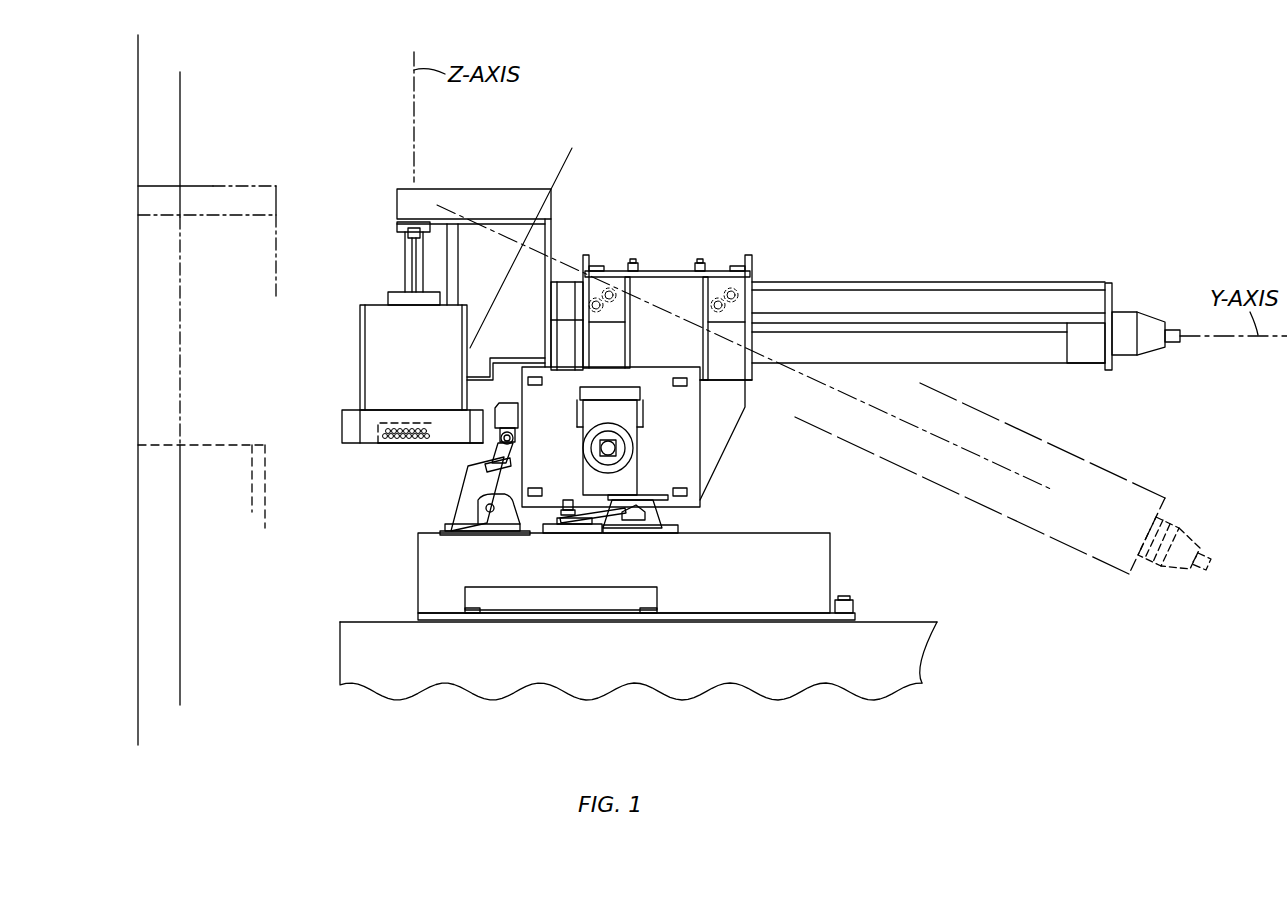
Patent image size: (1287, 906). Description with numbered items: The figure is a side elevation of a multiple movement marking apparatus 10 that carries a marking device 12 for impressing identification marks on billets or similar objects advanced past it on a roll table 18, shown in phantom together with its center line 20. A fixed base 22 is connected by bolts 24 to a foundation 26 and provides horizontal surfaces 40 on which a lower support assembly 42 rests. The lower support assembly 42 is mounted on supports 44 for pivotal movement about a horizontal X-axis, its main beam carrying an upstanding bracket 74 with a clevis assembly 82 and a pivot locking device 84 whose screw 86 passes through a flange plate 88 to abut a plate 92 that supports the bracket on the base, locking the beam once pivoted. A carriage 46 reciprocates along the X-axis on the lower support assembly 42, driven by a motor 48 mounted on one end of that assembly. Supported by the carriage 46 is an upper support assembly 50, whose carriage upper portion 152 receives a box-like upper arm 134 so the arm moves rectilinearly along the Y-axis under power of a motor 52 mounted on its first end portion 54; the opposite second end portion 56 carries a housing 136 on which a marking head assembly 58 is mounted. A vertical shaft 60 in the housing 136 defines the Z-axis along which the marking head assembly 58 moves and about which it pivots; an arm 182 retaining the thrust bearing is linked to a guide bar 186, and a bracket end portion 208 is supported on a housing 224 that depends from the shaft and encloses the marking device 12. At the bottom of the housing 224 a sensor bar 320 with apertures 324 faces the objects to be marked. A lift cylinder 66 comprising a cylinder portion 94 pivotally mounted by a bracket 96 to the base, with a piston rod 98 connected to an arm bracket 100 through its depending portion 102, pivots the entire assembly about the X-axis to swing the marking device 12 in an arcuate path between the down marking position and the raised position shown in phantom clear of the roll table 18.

The marking apparatus 10 is at (820, 242).
The marking device 12 is at (395, 445).
The roll table 18 is at (225, 186).
The center line 20 is at (183, 100).
The fixed base 22 is at (832, 558).
The bolts 24 is at (853, 602).
The foundation 26 is at (920, 635).
The horizontal surfaces 40 is at (800, 533).
The lower support assembly 42 is at (666, 446).
The supports 44 is at (690, 521).
The carriage 46 is at (760, 410).
The motor 48 is at (592, 447).
The upper support assembly 50 is at (1019, 387).
The motor 52 is at (1155, 350).
The first end portion 54 is at (1080, 355).
The second end portion 56 is at (583, 282).
The marking head assembly 58 is at (345, 326).
The shaft 60 is at (405, 248).
The lift cylinder 66 is at (455, 512).
The upstanding bracket 74 is at (583, 430).
The clevis assembly 82 is at (640, 505).
The pivot locking device 84 is at (551, 528).
The screw 86 is at (567, 498).
The flange plate 88 is at (570, 526).
The plate 92 is at (605, 533).
The cylinder portion 94 is at (470, 513).
The bracket 96 is at (486, 497).
The piston rod 98 is at (490, 461).
The arm bracket 100 is at (510, 402).
The depending portion 102 is at (517, 432).
The upper arm 134 is at (1030, 283).
The housing 136 is at (500, 190).
The carriage upper portion 152 is at (767, 267).
The arm 182 is at (397, 225).
The guide bar 186 is at (413, 265).
The second end portion 208 is at (390, 297).
The housing 224 is at (360, 347).
The sensor bar 320 is at (345, 415).
The apertures 324 is at (405, 425).